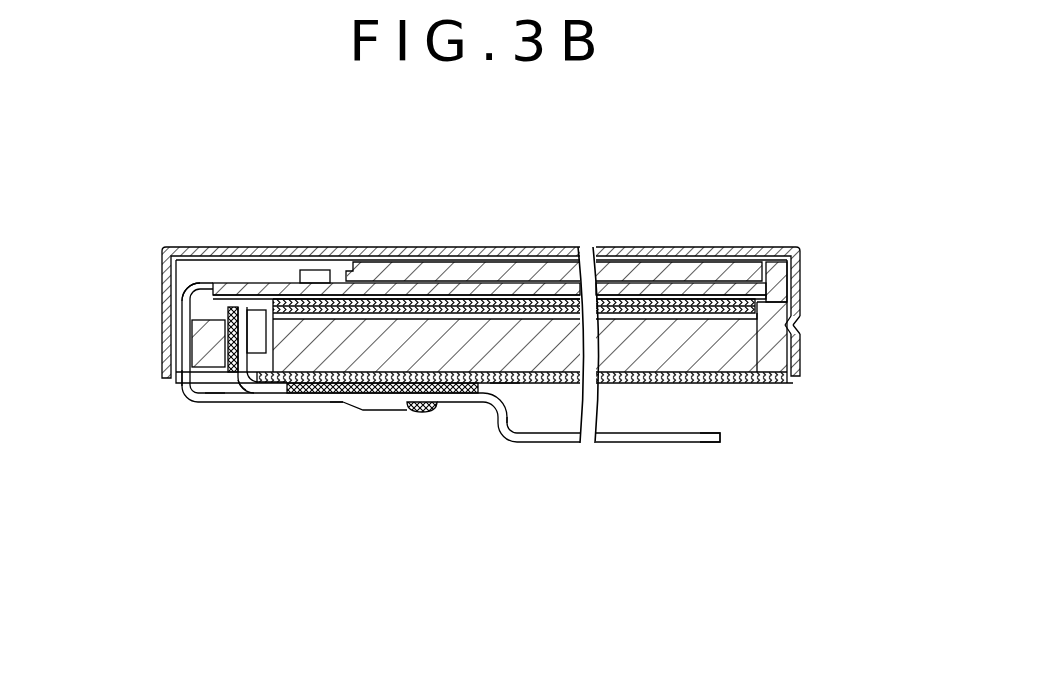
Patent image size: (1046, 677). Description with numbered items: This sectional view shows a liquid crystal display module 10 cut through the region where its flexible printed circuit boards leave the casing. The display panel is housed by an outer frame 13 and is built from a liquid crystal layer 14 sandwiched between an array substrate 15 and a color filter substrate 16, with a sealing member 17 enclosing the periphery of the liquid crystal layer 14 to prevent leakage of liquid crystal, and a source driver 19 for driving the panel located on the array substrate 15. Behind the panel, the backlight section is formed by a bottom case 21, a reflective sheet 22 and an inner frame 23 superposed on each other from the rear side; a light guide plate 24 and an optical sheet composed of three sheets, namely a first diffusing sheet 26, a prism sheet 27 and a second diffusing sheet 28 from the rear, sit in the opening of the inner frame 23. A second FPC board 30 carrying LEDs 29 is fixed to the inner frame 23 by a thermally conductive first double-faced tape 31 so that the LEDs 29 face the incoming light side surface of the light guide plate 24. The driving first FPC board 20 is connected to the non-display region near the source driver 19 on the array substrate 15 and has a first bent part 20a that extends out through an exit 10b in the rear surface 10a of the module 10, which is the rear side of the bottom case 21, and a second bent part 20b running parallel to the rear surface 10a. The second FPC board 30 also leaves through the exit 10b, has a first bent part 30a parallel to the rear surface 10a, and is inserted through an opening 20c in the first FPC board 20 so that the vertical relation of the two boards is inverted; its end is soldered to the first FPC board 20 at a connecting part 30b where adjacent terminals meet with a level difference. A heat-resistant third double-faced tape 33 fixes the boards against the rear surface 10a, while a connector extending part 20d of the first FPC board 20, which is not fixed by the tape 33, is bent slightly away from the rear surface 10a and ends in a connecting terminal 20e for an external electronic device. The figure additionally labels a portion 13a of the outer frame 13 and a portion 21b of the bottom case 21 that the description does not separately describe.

The liquid crystal display module 10 is at (80, 153).
The rear surface 10a is at (505, 388).
The exit 10b is at (216, 392).
The outer frame 13 is at (283, 258).
The engagement portion of upper case 13a is at (800, 312).
The liquid crystal layer 14 is at (450, 285).
The array substrate 15 is at (503, 296).
The color filter substrate 16 is at (395, 268).
The sealing member 17 is at (757, 262).
The source driver 19 is at (320, 276).
The first FPC board 20 is at (417, 400).
The first bent part 20a is at (176, 292).
The second bent part 20b is at (176, 393).
The opening 20c is at (350, 403).
The connector extending part 20d is at (563, 442).
The connecting terminal 20e is at (722, 440).
The bottom case 21 is at (621, 383).
The engagement portion of lower case 21b is at (802, 337).
The reflective sheet 22 is at (677, 383).
The inner frame 23 is at (205, 330).
The light guide plate 24 is at (739, 346).
The first diffusing sheet 26 is at (668, 318).
The prism sheet 27 is at (609, 304).
The second diffusing sheet 28 is at (555, 304).
The LEDs 29 is at (258, 343).
The second FPC board 30 is at (282, 394).
The first bent part 30a is at (243, 391).
The connecting part 30b is at (363, 403).
The first double-faced tape 31 is at (237, 308).
The third double-faced tape 33 is at (463, 394).